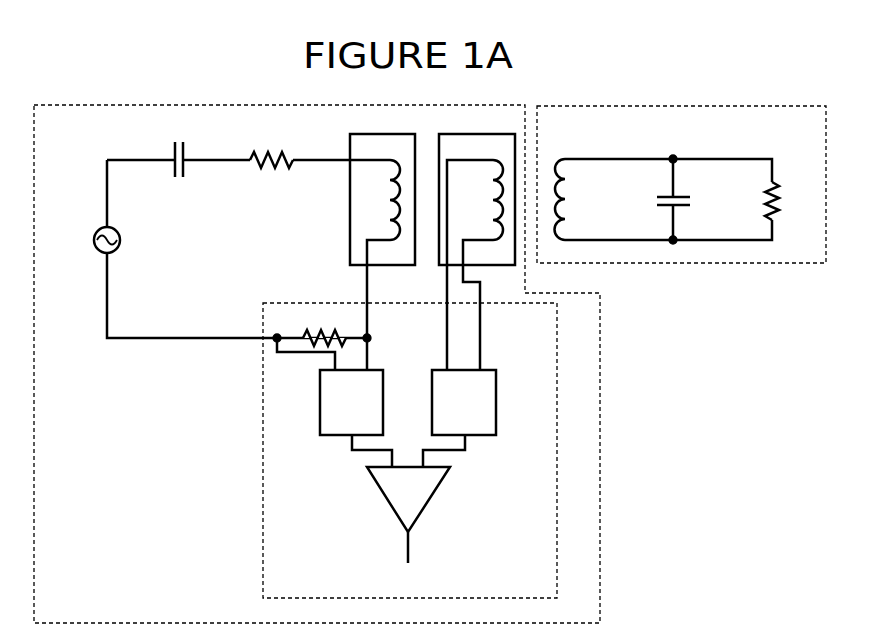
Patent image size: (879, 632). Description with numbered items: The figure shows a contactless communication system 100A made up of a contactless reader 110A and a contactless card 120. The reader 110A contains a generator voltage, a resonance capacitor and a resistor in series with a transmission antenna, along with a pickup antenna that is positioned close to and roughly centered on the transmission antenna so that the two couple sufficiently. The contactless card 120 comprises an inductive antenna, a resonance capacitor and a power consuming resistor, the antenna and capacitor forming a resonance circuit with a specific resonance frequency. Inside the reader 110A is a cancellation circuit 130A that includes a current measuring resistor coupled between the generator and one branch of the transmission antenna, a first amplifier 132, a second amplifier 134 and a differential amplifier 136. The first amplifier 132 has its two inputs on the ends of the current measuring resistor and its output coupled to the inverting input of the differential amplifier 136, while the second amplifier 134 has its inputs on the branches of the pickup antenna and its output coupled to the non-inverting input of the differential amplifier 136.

The contactless communication system 100A is at (752, 70).
The contactless reader 110A is at (388, 105).
The contactless card 120 is at (765, 106).
The cancellation circuit 130A is at (557, 327).
The first amplifier 132 is at (342, 437).
The second amplifier 134 is at (482, 437).
The differential amplifier 136 is at (382, 493).